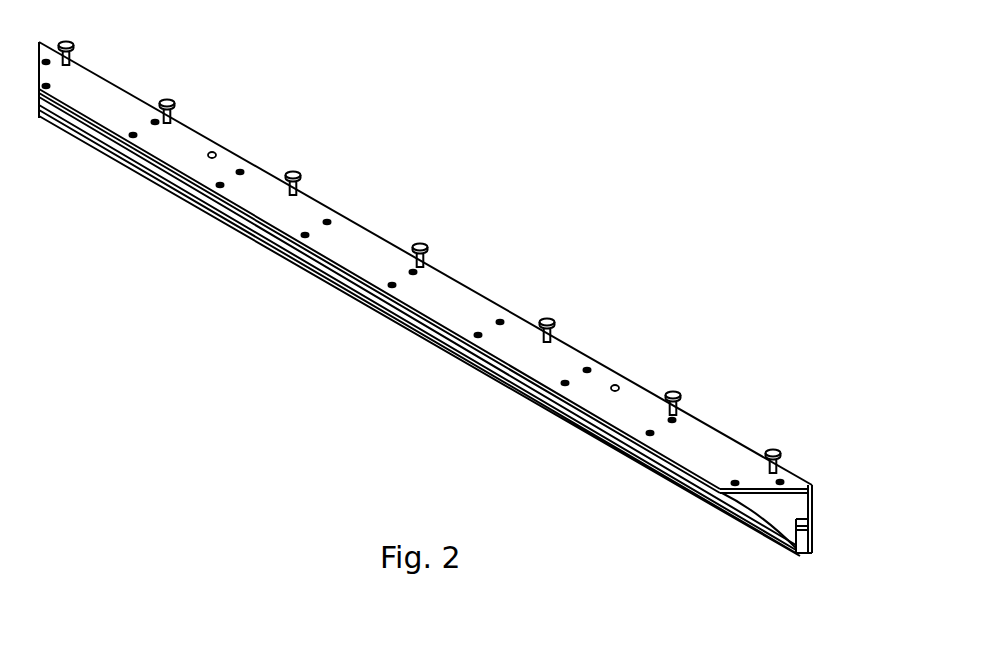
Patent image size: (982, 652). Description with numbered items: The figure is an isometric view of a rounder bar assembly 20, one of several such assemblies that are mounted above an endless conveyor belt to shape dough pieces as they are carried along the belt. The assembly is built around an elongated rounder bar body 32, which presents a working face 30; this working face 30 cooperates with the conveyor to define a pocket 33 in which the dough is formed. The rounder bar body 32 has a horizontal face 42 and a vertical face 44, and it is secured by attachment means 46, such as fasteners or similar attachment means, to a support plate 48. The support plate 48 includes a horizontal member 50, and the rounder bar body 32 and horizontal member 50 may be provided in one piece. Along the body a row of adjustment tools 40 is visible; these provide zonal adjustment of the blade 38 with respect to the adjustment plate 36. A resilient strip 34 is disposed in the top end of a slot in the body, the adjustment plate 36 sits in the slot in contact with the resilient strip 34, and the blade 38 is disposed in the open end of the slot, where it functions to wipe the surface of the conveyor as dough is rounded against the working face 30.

The rounder bar assembly 20 is at (458, 201).
The working face 30 is at (773, 530).
The rounder bar body 32 is at (777, 508).
The pocket 33 is at (746, 518).
The resilient strip 34 is at (810, 527).
The adjustment plate 36 is at (812, 535).
The blade 38 is at (805, 556).
The adjustment tool 40 is at (547, 318).
The horizontal face 42 is at (755, 490).
The vertical face 44 is at (809, 503).
The attachment means 46 is at (590, 368).
The support plate 48 is at (322, 203).
The horizontal member 50 is at (462, 307).